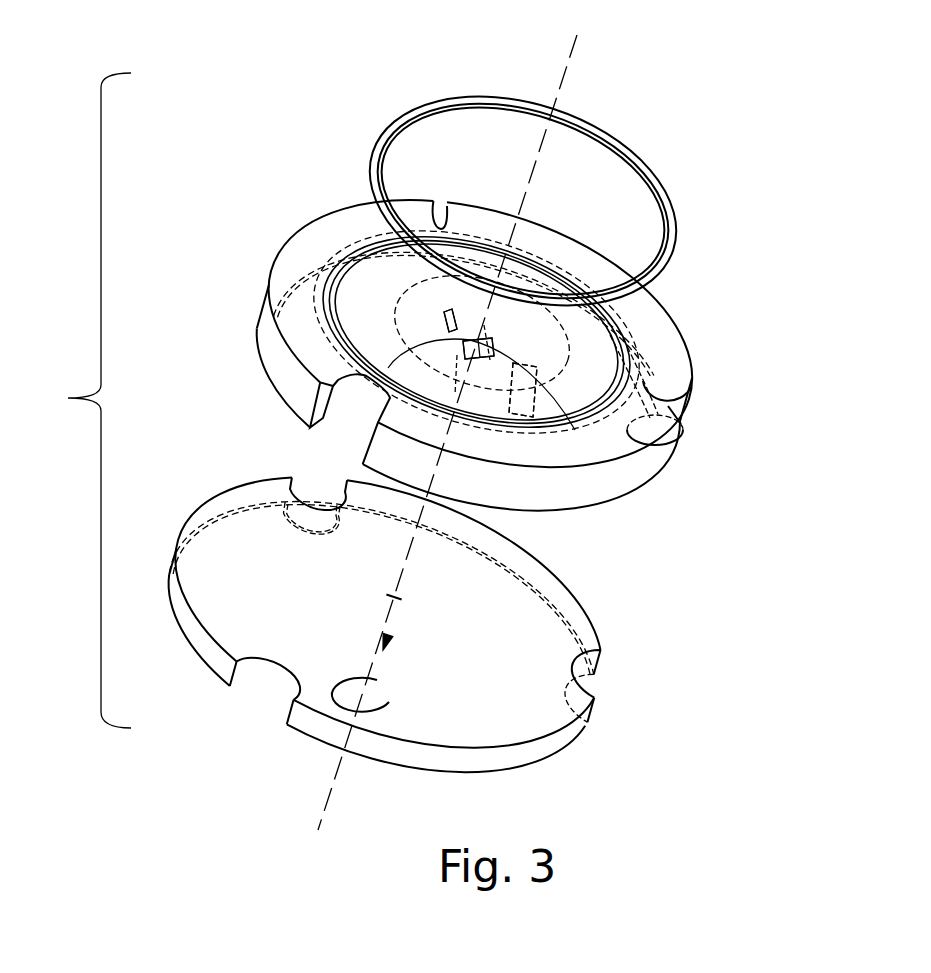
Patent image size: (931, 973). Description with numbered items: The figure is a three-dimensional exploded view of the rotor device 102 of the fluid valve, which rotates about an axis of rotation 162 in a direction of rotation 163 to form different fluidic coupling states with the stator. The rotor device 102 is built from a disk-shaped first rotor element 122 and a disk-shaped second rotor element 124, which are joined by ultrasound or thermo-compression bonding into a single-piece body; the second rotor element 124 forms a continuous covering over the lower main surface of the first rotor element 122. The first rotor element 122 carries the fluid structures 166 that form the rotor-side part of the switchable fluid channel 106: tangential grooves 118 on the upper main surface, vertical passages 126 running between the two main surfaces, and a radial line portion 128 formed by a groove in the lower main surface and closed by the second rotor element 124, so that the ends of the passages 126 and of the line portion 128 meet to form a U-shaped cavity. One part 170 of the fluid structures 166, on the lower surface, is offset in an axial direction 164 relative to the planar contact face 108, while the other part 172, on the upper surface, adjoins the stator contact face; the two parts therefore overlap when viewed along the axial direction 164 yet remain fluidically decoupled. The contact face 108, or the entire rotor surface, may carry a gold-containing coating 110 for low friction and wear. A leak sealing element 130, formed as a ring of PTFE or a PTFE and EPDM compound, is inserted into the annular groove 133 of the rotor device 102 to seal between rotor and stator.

The rotor device 102 is at (69, 400).
The fluid channel 106 is at (527, 316).
The contact face 108 is at (407, 290).
The coating 110 is at (405, 312).
The grooves 118 is at (484, 320).
The first rotor element 122 is at (668, 424).
The second rotor element 124 is at (600, 642).
The passages 126 is at (309, 428).
The line portion 128 is at (575, 430).
The leak sealing element 130 is at (616, 126).
The annular groove 133 is at (626, 366).
The axis of rotation 162 is at (352, 768).
The direction of rotation 163 is at (388, 692).
The axial direction 164 is at (395, 620).
The fluid structures 166 is at (537, 368).
The part of the fluid structures 170 is at (516, 382).
The other part of the fluid structures 172 is at (466, 342).